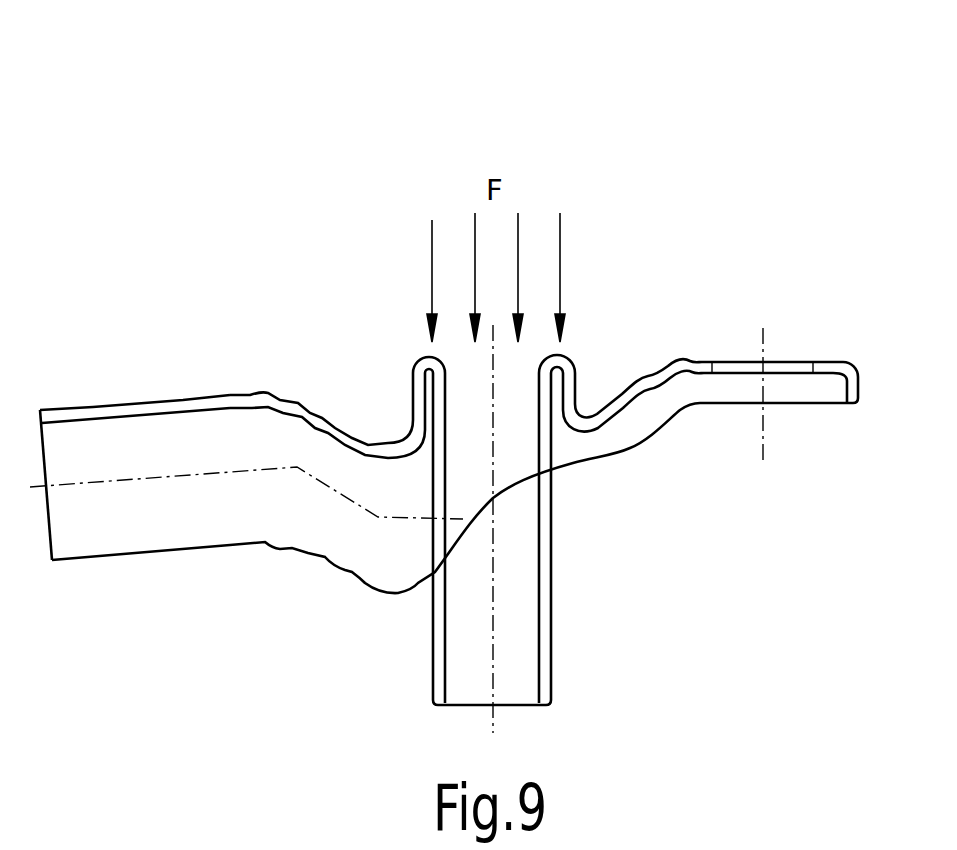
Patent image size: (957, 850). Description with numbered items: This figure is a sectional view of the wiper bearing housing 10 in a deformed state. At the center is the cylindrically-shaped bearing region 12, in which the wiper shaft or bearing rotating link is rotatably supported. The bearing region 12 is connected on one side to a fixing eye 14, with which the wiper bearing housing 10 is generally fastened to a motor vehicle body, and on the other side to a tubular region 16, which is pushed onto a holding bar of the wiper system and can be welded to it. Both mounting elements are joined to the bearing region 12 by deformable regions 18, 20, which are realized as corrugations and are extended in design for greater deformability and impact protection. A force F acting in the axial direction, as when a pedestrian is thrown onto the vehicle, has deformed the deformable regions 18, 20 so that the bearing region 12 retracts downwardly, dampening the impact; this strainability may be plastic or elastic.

The wiper bearing housing 10 is at (718, 145).
The bearing region 12 is at (548, 372).
The fixing eye 14 is at (843, 362).
The tubular region 16 is at (93, 407).
The deformable region 18 is at (650, 372).
The deformable region 20 is at (303, 403).